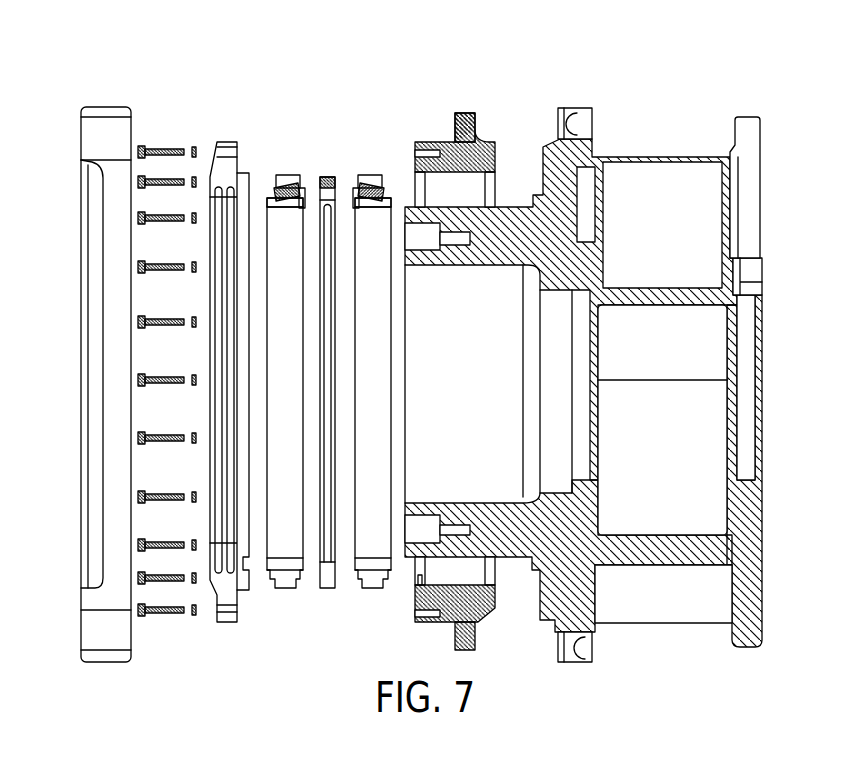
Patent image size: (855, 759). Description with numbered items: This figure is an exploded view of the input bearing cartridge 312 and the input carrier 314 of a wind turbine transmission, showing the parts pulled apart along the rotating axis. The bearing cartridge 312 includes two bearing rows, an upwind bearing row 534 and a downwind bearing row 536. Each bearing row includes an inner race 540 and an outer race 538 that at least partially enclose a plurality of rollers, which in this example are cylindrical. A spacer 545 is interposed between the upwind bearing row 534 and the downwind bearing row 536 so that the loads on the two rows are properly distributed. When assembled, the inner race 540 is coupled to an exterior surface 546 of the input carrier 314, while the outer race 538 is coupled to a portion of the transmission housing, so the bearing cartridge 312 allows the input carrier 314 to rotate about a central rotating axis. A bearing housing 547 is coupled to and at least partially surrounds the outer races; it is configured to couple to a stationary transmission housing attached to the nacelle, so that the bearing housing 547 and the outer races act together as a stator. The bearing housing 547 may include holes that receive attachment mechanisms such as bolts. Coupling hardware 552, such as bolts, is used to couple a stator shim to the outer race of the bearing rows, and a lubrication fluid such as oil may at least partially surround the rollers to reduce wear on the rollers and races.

The bearing cartridge 312 is at (237, 96).
The input carrier 314 is at (504, 216).
The upwind bearing row 534 is at (290, 140).
The downwind bearing row 536 is at (375, 140).
The outer race 538 is at (363, 180).
The inner race 540 is at (286, 205).
The spacer 545 is at (330, 140).
The exterior surface 546 is at (450, 207).
The bearing housing 547 is at (466, 113).
The coupling hardware 552 is at (138, 182).